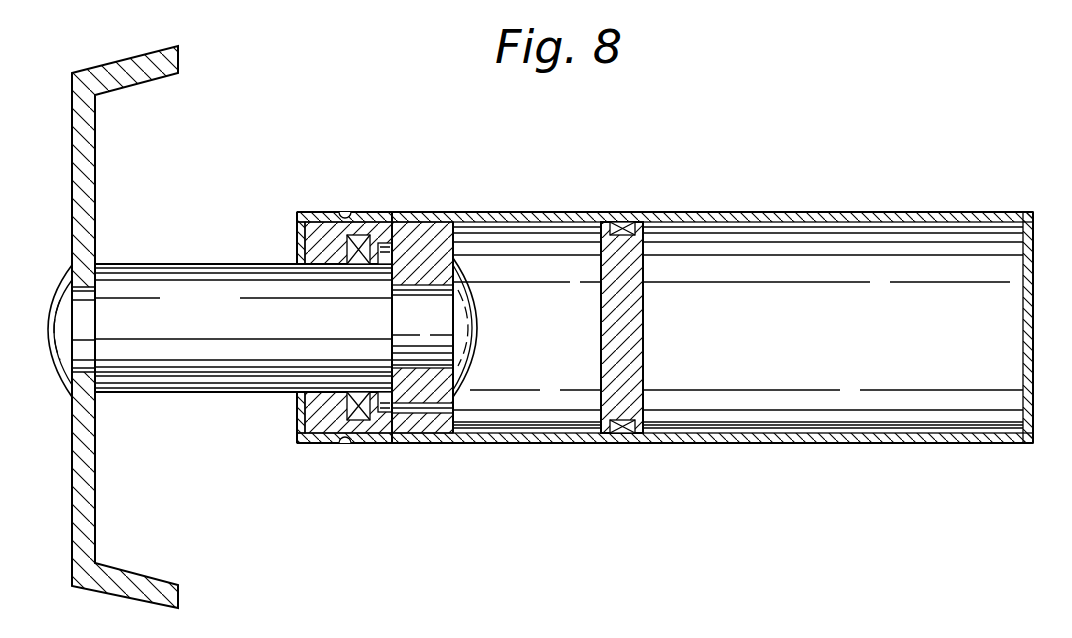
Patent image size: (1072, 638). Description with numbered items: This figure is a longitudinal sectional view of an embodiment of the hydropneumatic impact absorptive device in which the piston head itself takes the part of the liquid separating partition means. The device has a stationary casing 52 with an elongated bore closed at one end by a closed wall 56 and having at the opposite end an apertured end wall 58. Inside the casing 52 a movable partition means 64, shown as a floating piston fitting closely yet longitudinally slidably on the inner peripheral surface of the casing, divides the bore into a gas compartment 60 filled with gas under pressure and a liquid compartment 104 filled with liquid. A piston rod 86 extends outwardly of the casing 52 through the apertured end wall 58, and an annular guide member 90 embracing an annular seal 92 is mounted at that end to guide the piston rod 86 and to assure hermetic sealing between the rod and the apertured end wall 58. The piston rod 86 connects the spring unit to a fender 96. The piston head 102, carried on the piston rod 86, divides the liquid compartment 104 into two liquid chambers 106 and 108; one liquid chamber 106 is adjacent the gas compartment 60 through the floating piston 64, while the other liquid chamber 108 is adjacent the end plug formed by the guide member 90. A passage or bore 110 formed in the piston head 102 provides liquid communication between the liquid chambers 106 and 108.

The stationary casing 52 is at (742, 443).
The closed wall 56 is at (1034, 222).
The apertured end wall 58 is at (297, 413).
The gas compartment 60 is at (850, 338).
The movable partition means 64 is at (645, 272).
The piston rod 86 is at (194, 394).
The annular guide member 90 is at (321, 226).
The annular seal 92 is at (359, 236).
The fender 96 is at (98, 150).
The piston head 102 is at (455, 248).
The liquid compartment 104 is at (557, 340).
The liquid chamber 106 is at (537, 418).
The liquid chamber 108 is at (384, 413).
The passage or bore 110 is at (455, 408).